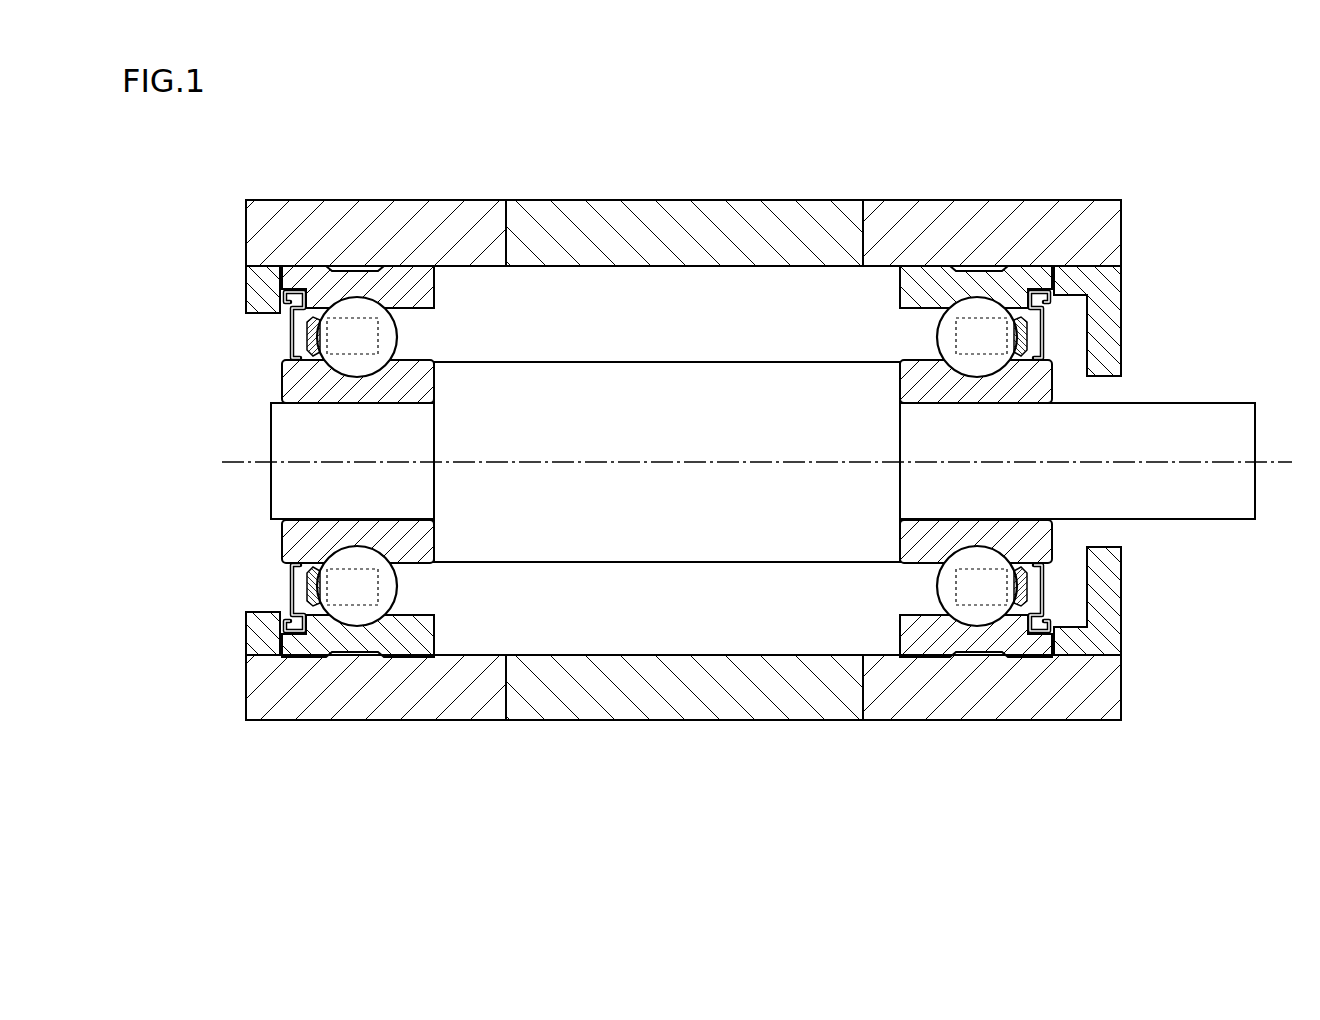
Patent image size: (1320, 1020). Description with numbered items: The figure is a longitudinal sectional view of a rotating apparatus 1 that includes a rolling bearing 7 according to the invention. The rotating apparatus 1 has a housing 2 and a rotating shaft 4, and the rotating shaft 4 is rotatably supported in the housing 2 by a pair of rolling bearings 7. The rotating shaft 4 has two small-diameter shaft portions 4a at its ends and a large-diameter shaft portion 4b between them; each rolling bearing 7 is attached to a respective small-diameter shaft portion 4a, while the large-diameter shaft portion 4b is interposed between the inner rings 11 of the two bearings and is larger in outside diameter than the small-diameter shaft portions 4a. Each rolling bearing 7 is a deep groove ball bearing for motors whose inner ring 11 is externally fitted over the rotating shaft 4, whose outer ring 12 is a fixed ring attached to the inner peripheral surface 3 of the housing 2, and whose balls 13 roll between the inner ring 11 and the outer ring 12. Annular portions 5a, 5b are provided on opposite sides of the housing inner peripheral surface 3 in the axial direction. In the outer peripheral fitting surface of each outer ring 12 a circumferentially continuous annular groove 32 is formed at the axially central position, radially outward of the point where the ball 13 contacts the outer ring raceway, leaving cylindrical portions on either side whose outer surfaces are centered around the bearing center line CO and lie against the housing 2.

The rotating apparatus 1 is at (1105, 199).
The housing 2 is at (424, 232).
The inner peripheral surface 3 is at (300, 286).
The rotating shaft 4 is at (1226, 401).
The small-diameter shaft portion 4a is at (285, 438).
The large-diameter shaft portion 4b is at (680, 532).
The annular portion 5a is at (256, 293).
The annular portion 5b is at (1118, 302).
The rolling bearing 7 is at (305, 658).
The inner ring 11 is at (291, 535).
The outer ring 12 is at (294, 650).
The ball 13 is at (372, 590).
The annular groove 32 is at (357, 657).
The bearing center line CO is at (1285, 422).